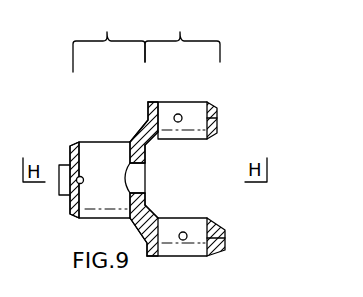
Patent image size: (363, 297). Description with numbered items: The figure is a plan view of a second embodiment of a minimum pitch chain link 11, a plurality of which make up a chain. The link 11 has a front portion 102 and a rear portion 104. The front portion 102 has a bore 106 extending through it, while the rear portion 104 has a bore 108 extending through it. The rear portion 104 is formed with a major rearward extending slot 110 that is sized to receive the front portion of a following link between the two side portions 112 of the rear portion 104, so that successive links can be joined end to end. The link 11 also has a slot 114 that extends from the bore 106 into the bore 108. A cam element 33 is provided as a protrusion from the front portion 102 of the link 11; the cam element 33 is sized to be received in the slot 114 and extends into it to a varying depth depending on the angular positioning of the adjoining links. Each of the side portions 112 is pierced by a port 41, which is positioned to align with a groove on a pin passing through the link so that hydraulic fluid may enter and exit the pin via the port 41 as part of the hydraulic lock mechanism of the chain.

The front portion 102 is at (109, 38).
The rear portion 104 is at (182, 32).
The link 11 is at (210, 101).
The cam element 33 is at (59, 178).
The port 41 is at (180, 114).
The bore 106 is at (100, 219).
The bore 108 is at (182, 256).
The rearward extending slot 110 is at (208, 172).
The side portions 112 is at (217, 116).
The slot 114 is at (132, 178).